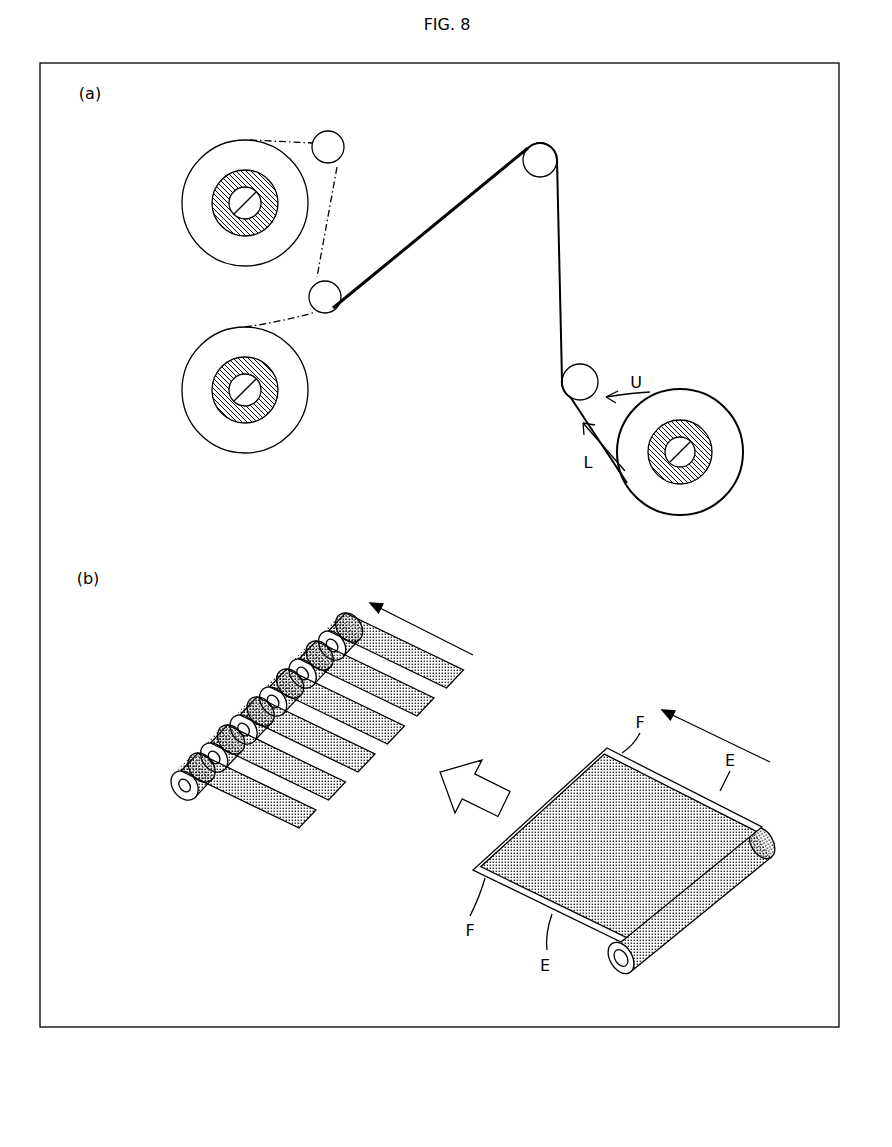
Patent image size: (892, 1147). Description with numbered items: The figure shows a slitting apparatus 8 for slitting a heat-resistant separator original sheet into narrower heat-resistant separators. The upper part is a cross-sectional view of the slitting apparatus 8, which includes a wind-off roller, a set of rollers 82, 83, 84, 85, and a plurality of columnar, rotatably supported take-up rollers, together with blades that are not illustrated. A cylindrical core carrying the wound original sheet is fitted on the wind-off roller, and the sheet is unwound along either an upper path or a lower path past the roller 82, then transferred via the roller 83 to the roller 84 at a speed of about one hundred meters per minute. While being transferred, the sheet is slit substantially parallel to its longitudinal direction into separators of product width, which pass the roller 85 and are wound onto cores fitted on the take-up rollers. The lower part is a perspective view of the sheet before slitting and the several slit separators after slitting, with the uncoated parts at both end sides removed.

The slitting apparatus 8 is at (718, 122).
The roller 82 is at (586, 367).
The roller 83 is at (558, 153).
The roller 84 is at (330, 313).
The roller 85 is at (331, 131).